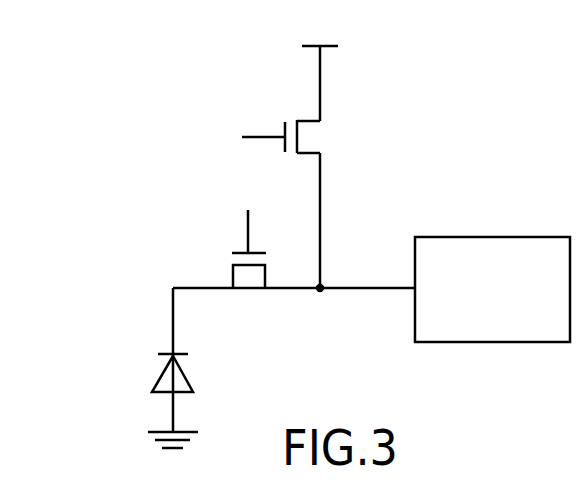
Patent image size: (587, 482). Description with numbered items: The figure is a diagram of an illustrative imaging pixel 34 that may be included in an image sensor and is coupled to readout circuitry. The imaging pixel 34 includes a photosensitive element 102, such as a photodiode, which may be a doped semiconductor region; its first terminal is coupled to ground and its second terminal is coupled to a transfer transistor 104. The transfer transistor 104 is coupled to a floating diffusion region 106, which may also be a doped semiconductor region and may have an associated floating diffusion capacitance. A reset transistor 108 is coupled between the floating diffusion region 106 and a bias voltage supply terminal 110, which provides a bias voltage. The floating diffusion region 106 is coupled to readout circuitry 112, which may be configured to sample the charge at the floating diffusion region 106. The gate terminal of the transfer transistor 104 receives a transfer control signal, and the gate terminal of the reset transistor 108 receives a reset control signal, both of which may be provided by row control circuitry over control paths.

The imaging pixel 34 is at (131, 166).
The photosensitive element 102 is at (124, 371).
The transfer transistor 104 is at (249, 306).
The floating diffusion region 106 is at (320, 292).
The reset transistor 108 is at (340, 137).
The bias voltage supply terminal 110 is at (331, 49).
The readout circuitry 112 is at (490, 237).